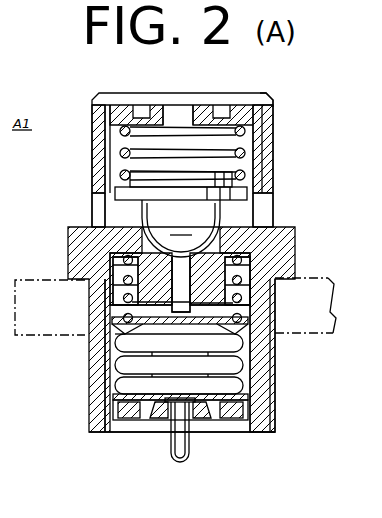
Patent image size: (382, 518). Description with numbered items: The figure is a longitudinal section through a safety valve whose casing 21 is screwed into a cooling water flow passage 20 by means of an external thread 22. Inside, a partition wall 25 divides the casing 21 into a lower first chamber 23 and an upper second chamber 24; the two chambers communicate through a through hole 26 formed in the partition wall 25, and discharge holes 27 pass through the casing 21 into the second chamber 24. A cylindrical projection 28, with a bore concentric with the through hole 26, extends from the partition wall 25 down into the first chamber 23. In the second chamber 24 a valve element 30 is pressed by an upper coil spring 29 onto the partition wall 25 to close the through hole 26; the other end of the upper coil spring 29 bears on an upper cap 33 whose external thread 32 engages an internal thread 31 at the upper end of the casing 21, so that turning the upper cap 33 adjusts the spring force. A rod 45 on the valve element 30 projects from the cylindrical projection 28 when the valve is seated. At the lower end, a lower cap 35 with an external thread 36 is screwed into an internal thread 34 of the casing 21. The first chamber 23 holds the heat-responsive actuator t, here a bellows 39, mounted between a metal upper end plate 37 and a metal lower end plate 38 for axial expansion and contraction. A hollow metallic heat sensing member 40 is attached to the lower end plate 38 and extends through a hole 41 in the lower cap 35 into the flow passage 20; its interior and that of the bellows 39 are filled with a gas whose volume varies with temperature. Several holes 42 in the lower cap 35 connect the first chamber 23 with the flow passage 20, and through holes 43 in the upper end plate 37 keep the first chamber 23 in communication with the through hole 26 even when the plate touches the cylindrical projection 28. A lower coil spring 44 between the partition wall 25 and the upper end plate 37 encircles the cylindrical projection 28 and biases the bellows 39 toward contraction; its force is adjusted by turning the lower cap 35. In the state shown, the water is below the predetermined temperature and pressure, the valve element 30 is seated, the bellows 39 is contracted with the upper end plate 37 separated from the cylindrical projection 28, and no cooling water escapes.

The cooling water flow passage 20 is at (55, 280).
The casing 21 is at (292, 242).
The external thread 22 is at (272, 378).
The first chamber 23 is at (243, 354).
The second chamber 24 is at (248, 163).
The partition wall 25 is at (130, 242).
The through hole 26 is at (209, 262).
The discharge holes 27 is at (266, 212).
The cylindrical projection 28 is at (241, 297).
The upper coil spring 29 is at (195, 98).
The valve element 30 is at (181, 256).
The internal thread 31 is at (263, 95).
The external thread 32 is at (262, 114).
The upper cap 33 is at (158, 97).
The internal thread 34 is at (255, 397).
The lower cap 35 is at (205, 424).
The external thread 36 is at (108, 405).
The upper end plate 37 is at (310, 305).
The lower end plate 38 is at (123, 424).
The bellows 39 is at (125, 334).
The heat sensing member 40 is at (179, 463).
The hole 41 is at (165, 422).
The holes 42 is at (250, 424).
The through holes 43 is at (160, 312).
The lower coil spring 44 is at (126, 276).
The rod 45 is at (170, 289).
The heat-responsive actuator t is at (110, 380).